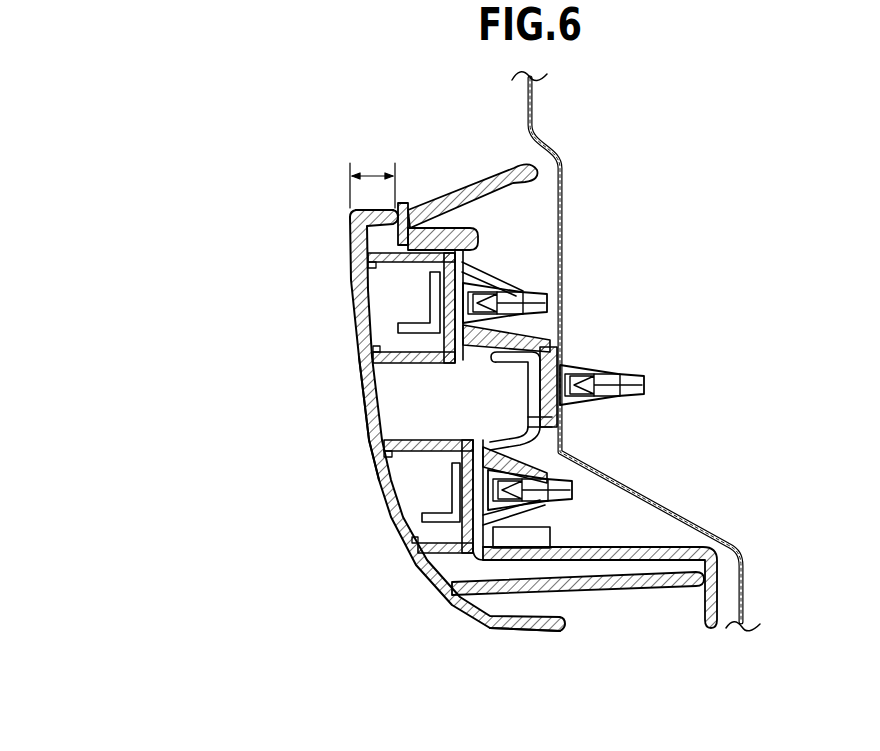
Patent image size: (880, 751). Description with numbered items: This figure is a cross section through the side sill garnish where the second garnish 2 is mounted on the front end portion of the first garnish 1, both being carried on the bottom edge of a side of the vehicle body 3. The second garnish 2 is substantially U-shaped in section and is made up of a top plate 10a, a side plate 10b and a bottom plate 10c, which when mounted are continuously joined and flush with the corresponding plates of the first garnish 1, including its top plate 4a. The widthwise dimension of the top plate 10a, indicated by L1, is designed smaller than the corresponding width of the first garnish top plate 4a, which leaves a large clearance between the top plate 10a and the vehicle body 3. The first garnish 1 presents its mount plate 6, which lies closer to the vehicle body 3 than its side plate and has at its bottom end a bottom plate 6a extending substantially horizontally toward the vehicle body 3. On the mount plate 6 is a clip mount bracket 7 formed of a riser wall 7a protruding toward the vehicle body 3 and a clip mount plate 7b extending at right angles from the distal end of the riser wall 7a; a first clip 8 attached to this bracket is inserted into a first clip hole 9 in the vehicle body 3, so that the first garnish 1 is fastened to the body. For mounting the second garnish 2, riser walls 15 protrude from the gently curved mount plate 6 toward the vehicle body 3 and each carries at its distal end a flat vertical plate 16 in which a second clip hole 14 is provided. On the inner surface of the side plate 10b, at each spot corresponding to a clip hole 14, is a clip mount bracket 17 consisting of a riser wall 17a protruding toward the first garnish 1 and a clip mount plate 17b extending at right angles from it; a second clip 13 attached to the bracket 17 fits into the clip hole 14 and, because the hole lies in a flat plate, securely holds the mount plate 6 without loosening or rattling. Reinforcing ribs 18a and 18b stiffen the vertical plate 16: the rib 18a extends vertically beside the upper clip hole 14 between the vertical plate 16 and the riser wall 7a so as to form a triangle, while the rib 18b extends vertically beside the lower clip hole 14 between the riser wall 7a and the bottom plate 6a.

The first garnish 1 is at (437, 176).
The second garnish 2 is at (336, 281).
The vehicle body 3 is at (564, 196).
The top plate 4a is at (468, 197).
The mount plate 6 is at (420, 222).
The bottom plate 6a is at (598, 561).
The clip mount bracket 7 is at (688, 312).
The riser wall 7a is at (542, 346).
The clip mount plate 7b is at (563, 354).
The first clip 8 is at (622, 396).
The first clip hole 9 is at (563, 408).
The top plate 10a is at (350, 212).
The side plate 10b is at (363, 410).
The bottom plate 10c is at (516, 632).
The second clip 13 is at (548, 298).
The second clip hole 14 is at (525, 282).
The riser wall 15 is at (432, 234).
The vertical plate 16 is at (470, 276).
The clip mount bracket 17 is at (268, 300).
The riser wall 17a is at (374, 350).
The clip mount plate 17b is at (415, 345).
The reinforcing rib 18a is at (533, 321).
The reinforcing rib 18b is at (632, 548).
The dimension of the top plate in the width direction L1 is at (372, 175).